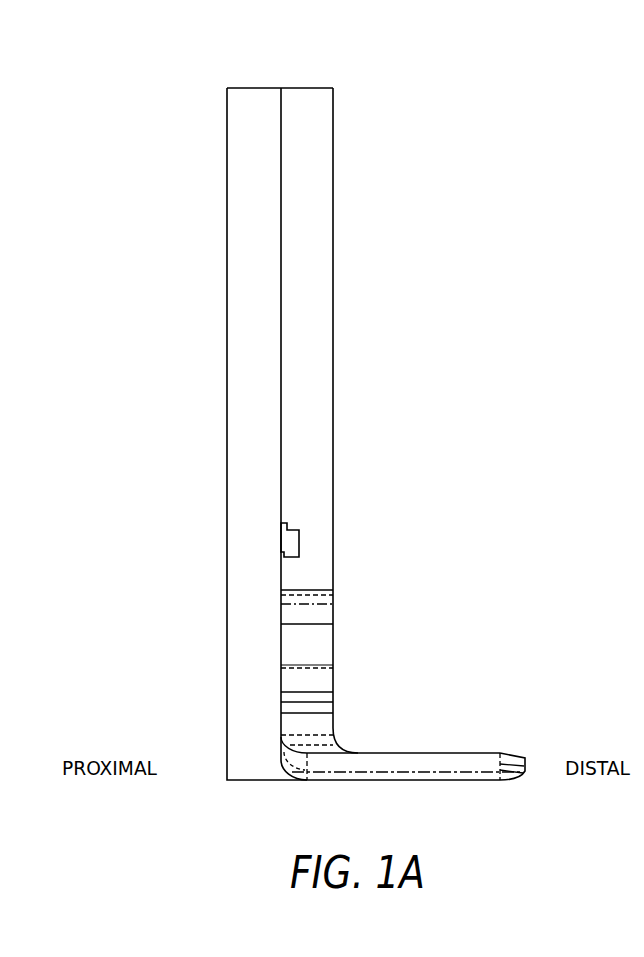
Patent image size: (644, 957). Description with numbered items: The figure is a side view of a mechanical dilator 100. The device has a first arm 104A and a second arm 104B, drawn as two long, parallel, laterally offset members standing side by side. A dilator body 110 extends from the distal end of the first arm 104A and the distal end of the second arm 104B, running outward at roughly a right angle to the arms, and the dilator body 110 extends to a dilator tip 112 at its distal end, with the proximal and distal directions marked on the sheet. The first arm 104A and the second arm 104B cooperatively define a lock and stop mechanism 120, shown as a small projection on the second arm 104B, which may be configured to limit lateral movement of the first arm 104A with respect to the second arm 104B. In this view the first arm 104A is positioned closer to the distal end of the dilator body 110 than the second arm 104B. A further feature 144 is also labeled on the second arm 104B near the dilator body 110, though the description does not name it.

The mechanical dilator 100 is at (363, 284).
The first arm 104A is at (252, 88).
The second arm 104B is at (333, 133).
The dilator body 110 is at (398, 752).
The dilator tip 112 is at (512, 753).
The lock and stop mechanism 120 is at (310, 543).
The internal component / track 144 is at (281, 665).